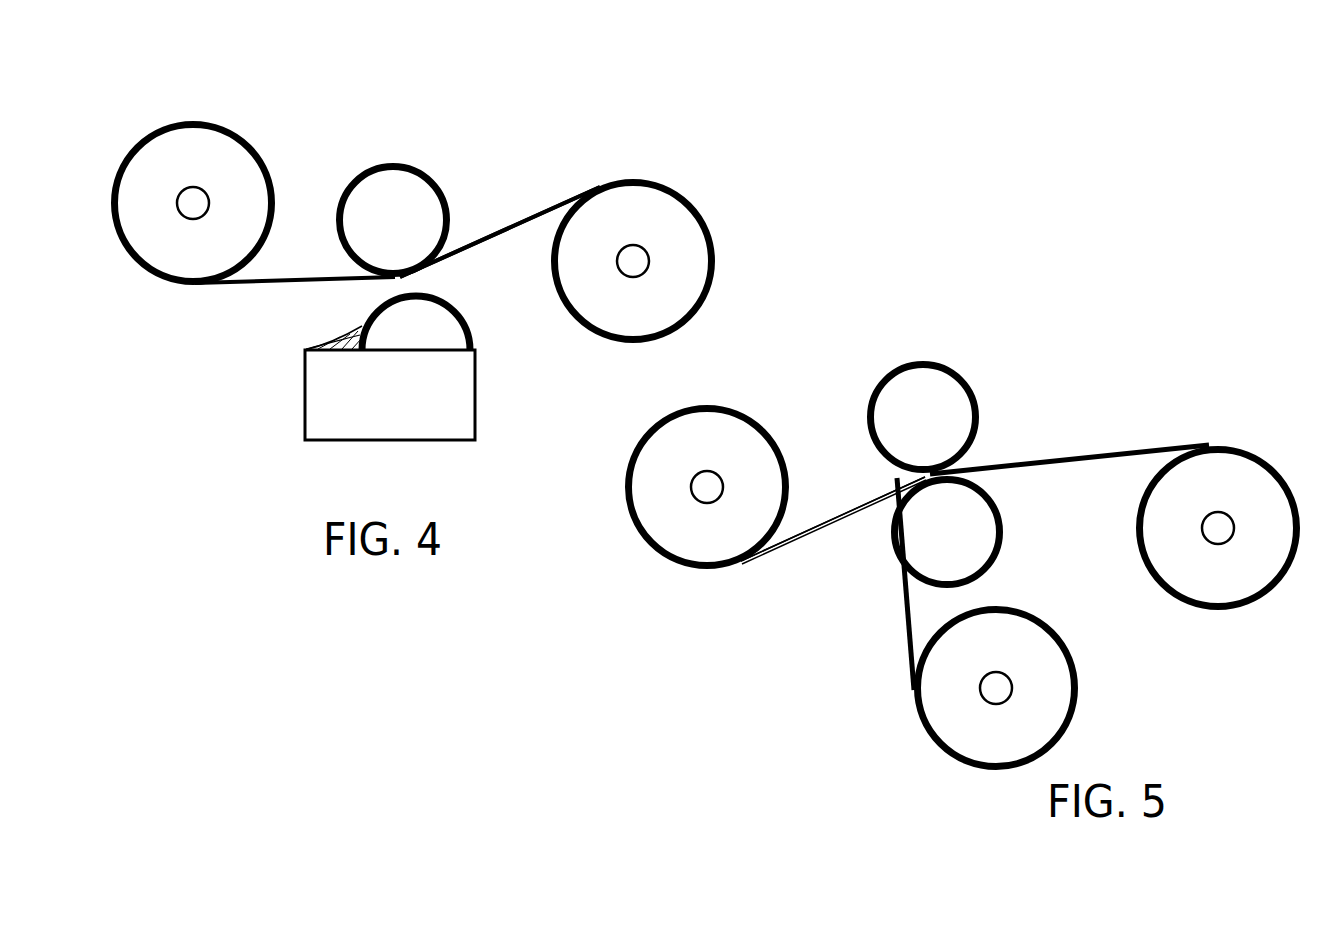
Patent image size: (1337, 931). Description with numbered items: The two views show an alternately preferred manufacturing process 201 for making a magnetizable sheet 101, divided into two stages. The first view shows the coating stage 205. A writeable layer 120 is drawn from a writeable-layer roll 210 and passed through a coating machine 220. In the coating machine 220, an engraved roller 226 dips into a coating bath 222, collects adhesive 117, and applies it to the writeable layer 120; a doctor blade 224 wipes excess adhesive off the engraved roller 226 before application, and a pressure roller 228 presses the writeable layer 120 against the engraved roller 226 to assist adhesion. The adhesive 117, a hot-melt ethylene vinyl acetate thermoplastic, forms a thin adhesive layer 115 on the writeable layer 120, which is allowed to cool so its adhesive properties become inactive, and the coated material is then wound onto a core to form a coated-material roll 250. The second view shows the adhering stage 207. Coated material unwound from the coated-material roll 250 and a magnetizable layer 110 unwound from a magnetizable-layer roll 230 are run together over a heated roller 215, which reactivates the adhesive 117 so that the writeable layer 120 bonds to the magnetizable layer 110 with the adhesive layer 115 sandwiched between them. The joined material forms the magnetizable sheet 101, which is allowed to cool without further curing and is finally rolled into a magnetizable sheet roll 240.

In FIG. 5, the magnetizable sheet 101 is at (1122, 455).
In FIG. 5, the magnetizable layer 110 is at (897, 605).
In FIG. 4, the adhesive layer 115 is at (526, 230).
In FIG. 5, the adhesive layer 115 is at (858, 520).
In FIG. 4, the adhesive 117 is at (345, 336).
In FIG. 4, the writeable layer 120 is at (335, 277).
In FIG. 5, the writeable layer 120 is at (860, 505).
In FIG. 4, the alternately preferred manufacturing process 201 is at (226, 90).
In FIG. 5, the alternately preferred manufacturing process 201 is at (738, 695).
In FIG. 4, the coating stage 205 is at (320, 95).
In FIG. 5, the adhering stage 207 is at (722, 662).
In FIG. 4, the writeable-layer roll 210 is at (115, 185).
In FIG. 5, the heated roller 215 is at (866, 425).
In FIG. 4, the coating machine 220 is at (262, 405).
In FIG. 4, the coating bath 222 is at (304, 386).
In FIG. 4, the doctor blade 224 is at (352, 325).
In FIG. 4, the engraved roller 226 is at (478, 315).
In FIG. 4, the pressure roller 228 is at (376, 166).
In FIG. 5, the magnetizable-layer roll 230 is at (972, 768).
In FIG. 5, the magnetizable sheet roll 240 is at (1136, 525).
In FIG. 4, the coated-material roll 250 is at (706, 208).
In FIG. 5, the coated-material roll 250 is at (628, 468).